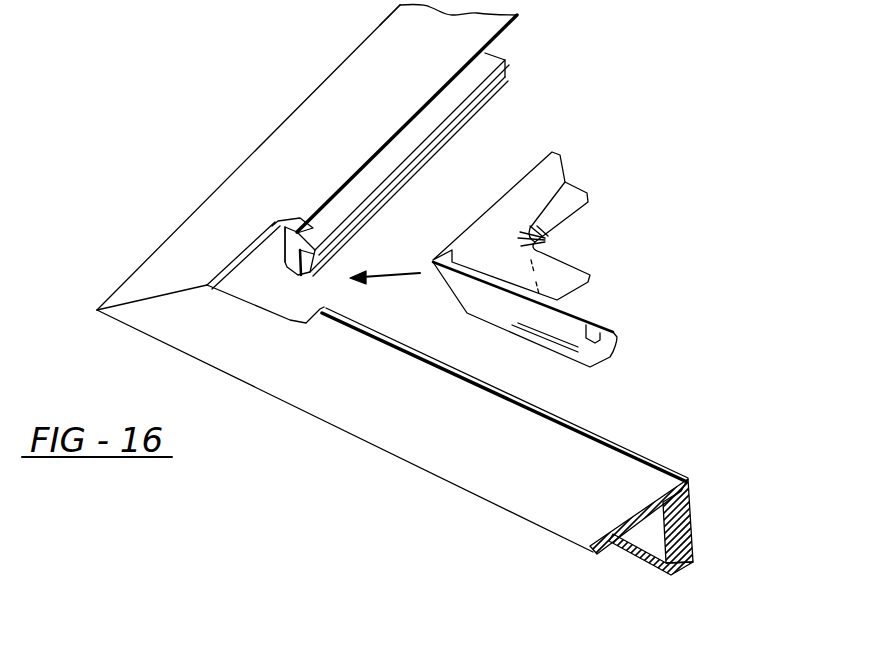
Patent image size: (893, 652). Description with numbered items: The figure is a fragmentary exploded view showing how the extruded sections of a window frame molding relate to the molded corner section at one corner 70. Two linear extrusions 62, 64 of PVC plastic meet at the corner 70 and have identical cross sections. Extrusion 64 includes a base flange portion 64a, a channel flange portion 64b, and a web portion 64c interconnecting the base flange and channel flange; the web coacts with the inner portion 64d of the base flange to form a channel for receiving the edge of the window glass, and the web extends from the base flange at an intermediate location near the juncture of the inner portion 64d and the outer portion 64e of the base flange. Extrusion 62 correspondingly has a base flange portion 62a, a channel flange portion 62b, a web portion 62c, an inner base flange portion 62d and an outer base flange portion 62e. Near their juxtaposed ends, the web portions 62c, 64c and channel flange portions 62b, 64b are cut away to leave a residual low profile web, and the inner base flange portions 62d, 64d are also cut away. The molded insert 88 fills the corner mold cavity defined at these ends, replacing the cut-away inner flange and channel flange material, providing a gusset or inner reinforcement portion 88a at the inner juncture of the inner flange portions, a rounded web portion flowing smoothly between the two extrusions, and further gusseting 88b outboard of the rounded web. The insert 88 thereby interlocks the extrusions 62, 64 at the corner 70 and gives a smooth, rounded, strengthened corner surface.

The corner 70 is at (84, 268).
The linear extrusion 62 is at (270, 112).
The base flange portion 62a is at (368, 86).
The channel flange portion 62b is at (497, 88).
The web portion 62c is at (290, 240).
The inner portion of base flange 62d is at (517, 15).
The outer portion of base flange 62e is at (257, 192).
The linear extrusion 64 is at (372, 455).
The base flange portion 64a is at (600, 472).
The channel flange portion 64b is at (702, 535).
The web portion 64c is at (653, 553).
The inner portion of base flange 64d is at (660, 478).
The outer portion of base flange 64e is at (500, 470).
The molded corner insert 88 is at (611, 177).
The gusset or inner reinforcement portion 88a is at (548, 240).
The outer gusseting 88b is at (454, 288).